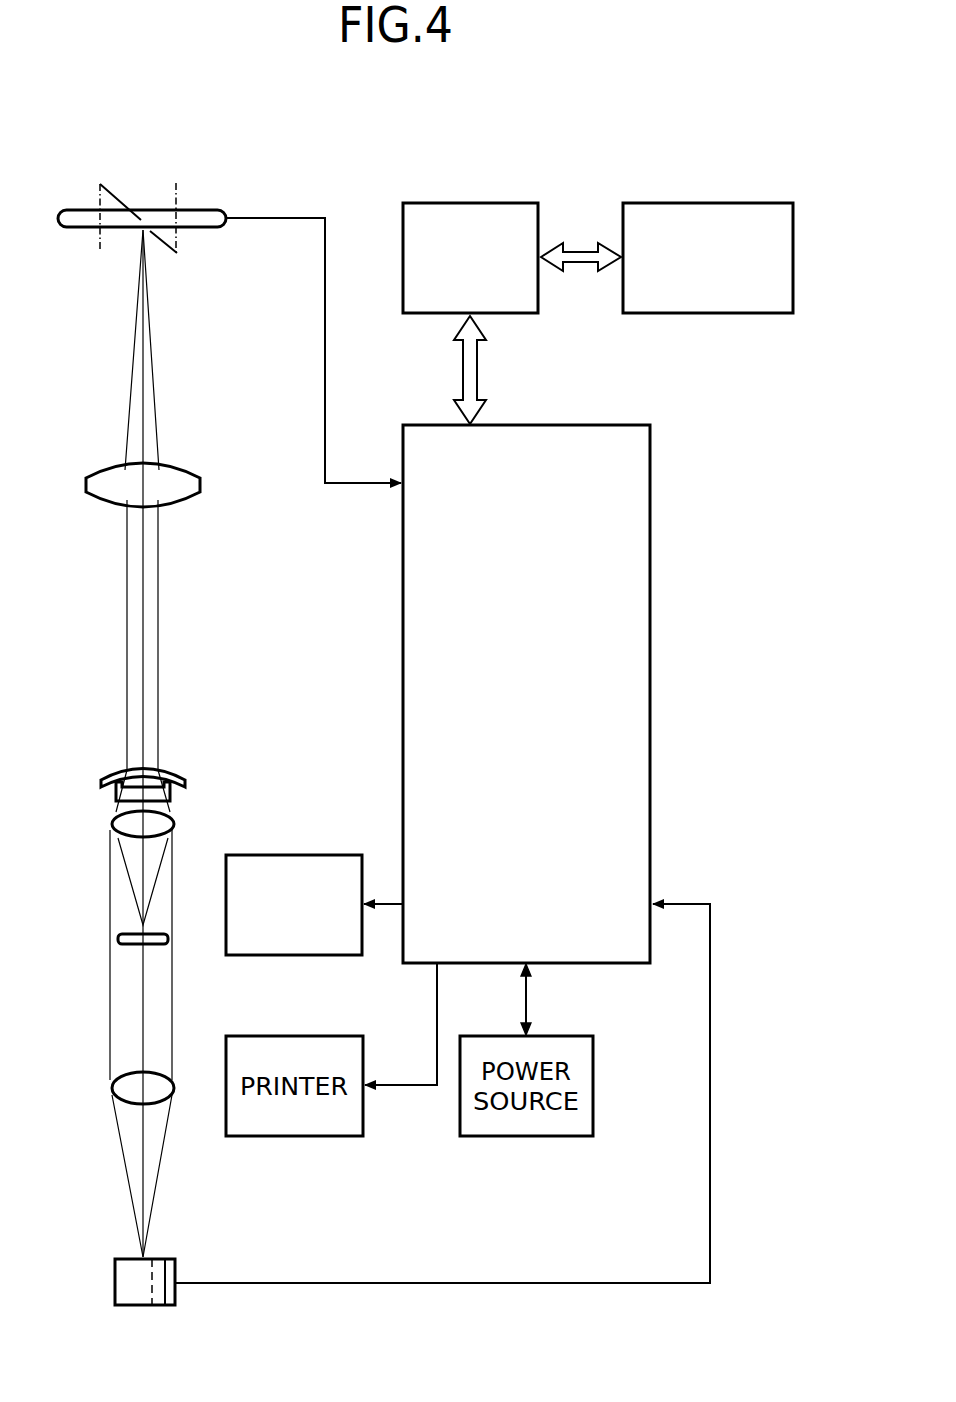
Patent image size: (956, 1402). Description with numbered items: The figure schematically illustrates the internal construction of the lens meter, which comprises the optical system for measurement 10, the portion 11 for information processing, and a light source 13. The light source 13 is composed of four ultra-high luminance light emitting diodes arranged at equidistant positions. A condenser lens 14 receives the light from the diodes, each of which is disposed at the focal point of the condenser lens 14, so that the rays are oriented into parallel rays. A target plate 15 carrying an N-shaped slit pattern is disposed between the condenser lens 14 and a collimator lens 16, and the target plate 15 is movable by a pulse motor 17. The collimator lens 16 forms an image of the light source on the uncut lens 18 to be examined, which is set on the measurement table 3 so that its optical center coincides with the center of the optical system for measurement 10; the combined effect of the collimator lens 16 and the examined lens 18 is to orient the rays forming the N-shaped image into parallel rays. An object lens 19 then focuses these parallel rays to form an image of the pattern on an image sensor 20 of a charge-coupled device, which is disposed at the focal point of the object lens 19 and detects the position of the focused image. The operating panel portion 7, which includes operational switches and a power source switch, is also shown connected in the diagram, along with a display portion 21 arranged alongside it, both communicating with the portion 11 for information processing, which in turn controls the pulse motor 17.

The measurement table 3 is at (117, 791).
The operating panel portion 7 is at (750, 203).
The optical system for measurement 10 is at (84, 579).
The portion for information processing 11 is at (652, 483).
The light source 13 is at (115, 1292).
The condenser lens 14 is at (118, 1089).
The target plate 15 is at (118, 940).
The collimator lens 16 is at (115, 827).
The pulse motor 17 is at (326, 855).
The uncut lens for examination 18 is at (106, 770).
The object lens 19 is at (110, 464).
The image sensor 20 is at (76, 210).
The display portion 21 is at (500, 203).